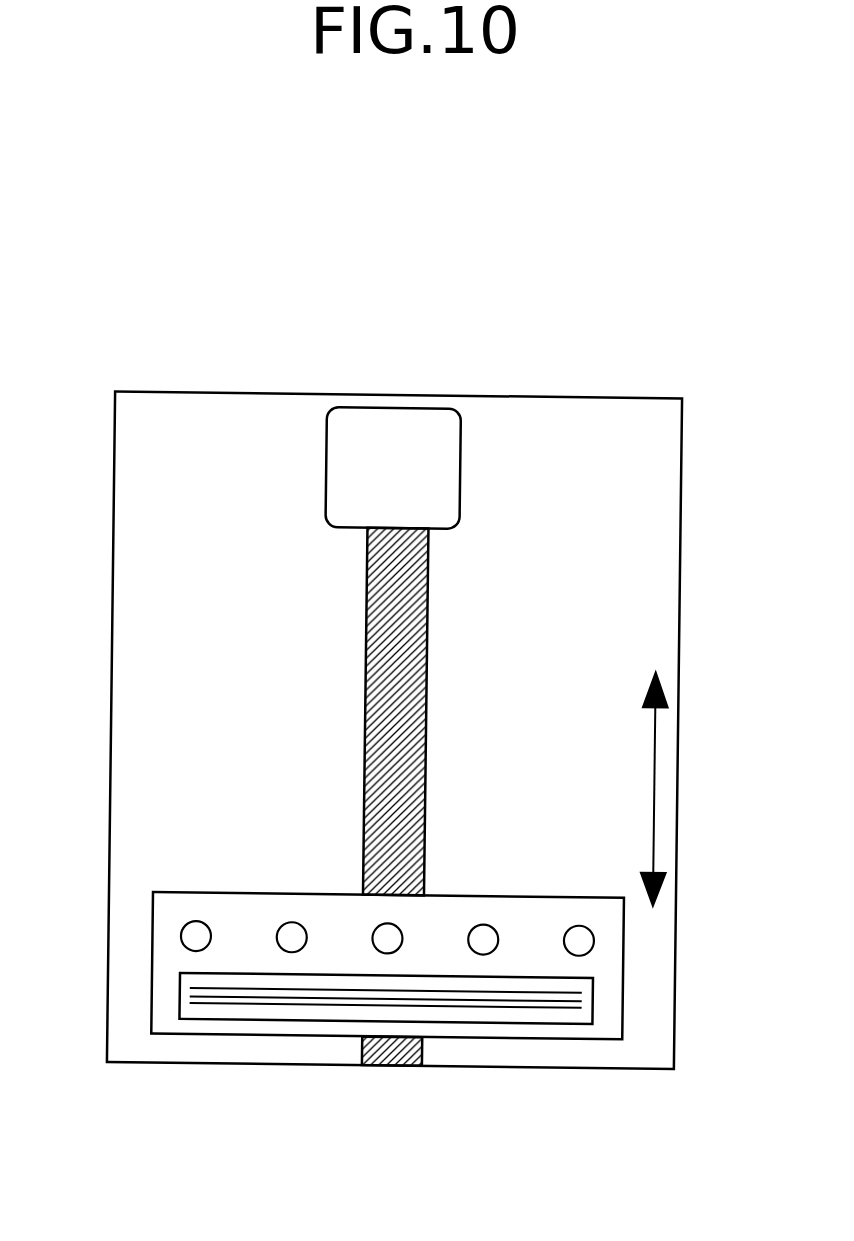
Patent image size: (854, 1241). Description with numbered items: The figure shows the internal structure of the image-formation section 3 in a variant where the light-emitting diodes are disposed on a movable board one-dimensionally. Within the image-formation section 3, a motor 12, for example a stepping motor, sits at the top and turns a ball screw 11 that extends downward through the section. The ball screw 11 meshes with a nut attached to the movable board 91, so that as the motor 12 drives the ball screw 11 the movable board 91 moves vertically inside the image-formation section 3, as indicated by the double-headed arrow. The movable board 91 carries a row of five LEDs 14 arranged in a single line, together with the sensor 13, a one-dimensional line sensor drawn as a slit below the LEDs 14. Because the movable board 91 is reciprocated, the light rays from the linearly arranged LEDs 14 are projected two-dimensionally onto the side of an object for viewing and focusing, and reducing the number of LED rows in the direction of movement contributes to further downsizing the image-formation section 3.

The image-formation section 3 is at (261, 402).
The motor 12 is at (330, 477).
The ball screw 11 is at (366, 614).
The movable board 91 is at (170, 916).
The LEDs 14 is at (588, 944).
The sensor 13 is at (586, 994).